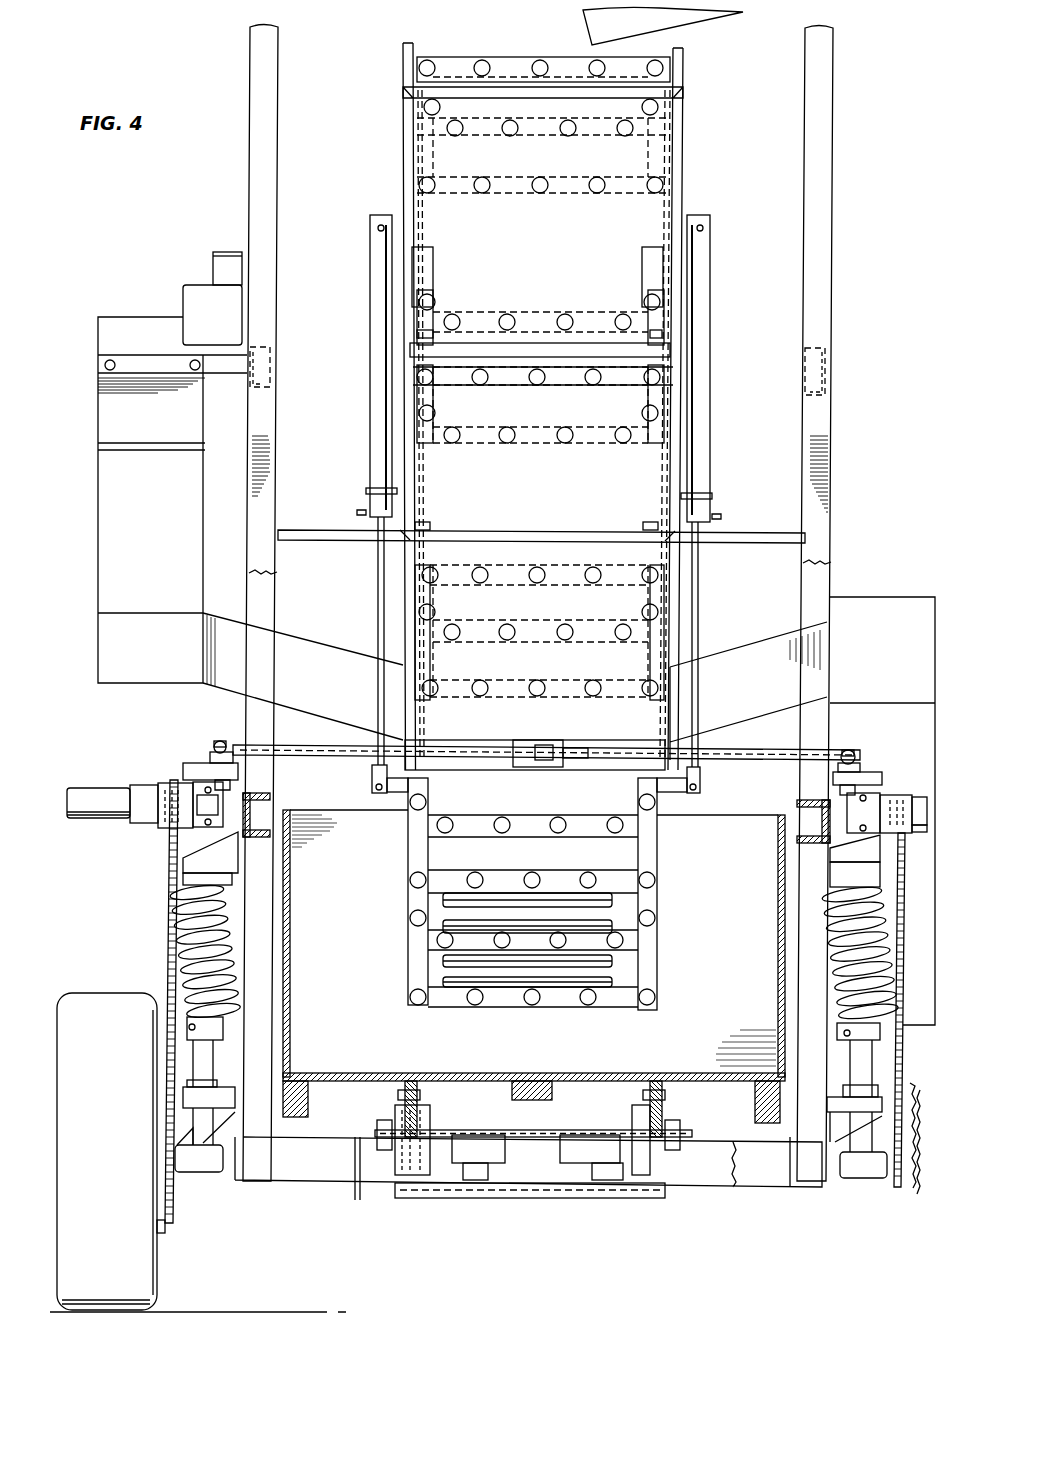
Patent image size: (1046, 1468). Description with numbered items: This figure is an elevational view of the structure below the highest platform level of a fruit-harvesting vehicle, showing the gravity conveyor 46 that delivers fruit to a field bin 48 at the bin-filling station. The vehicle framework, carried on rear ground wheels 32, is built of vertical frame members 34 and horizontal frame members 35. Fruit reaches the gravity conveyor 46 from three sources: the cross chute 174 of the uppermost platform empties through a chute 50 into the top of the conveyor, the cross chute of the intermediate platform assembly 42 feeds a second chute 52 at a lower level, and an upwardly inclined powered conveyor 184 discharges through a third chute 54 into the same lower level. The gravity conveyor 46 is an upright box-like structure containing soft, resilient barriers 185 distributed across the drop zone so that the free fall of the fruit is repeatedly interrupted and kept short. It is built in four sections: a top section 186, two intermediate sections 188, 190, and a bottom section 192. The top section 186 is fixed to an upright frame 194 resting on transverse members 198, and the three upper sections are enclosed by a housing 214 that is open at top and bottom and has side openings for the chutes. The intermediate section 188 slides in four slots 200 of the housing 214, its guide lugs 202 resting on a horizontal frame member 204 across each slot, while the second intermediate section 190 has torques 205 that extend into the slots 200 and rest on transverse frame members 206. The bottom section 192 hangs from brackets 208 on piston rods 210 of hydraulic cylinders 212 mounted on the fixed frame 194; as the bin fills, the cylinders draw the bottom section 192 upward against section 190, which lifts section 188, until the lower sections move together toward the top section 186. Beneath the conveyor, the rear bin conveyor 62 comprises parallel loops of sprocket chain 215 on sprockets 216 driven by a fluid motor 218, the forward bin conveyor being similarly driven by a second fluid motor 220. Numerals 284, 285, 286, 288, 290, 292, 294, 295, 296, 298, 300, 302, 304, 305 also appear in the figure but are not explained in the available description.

The rear ground wheels 32 is at (922, 1063).
The vertical frame members 34 is at (250, 228).
The horizontal frame members 35 is at (265, 383).
The intermediate platform assembly 42 is at (183, 290).
The gravity conveyor 46 is at (400, 200).
The field bin 48 is at (290, 985).
The chute 50 is at (590, 28).
The second chute 52 is at (228, 605).
The third chute 54 is at (747, 648).
The rear bin conveyor 62 is at (427, 1198).
The cross chute 174 is at (98, 395).
The second upwardly inclined powered conveyor 184 is at (882, 603).
The barriers 185 is at (520, 152).
The top section 186 is at (667, 147).
The intermediate section 188 is at (662, 393).
The second intermediate section 190 is at (665, 622).
The bottom section 192 is at (657, 907).
The upright frame 194 is at (683, 185).
The transverse members 198 is at (743, 533).
The slots 200 is at (433, 250).
The guide lugs 202 is at (417, 333).
The horizontal frame member 204 is at (520, 340).
The torques 205 is at (427, 523).
The transverse frame members 206 is at (538, 535).
The brackets 208 is at (397, 790).
The piston rods 210 is at (378, 698).
The hydraulic cylinders 212 is at (378, 446).
The housing 214 is at (535, 495).
The sprocket chain 215 is at (412, 1073).
The sprockets 216 is at (402, 1100).
The fluid motor 218 is at (570, 1140).
The second fluid motor 220 is at (487, 1163).
The foot 284 is at (208, 1172).
The strut rod 285 is at (205, 1060).
The block 286 is at (238, 855).
The spring 288 is at (183, 920).
The pin 290 is at (232, 890).
The rack 292 is at (170, 868).
The pin 294 is at (167, 785).
The plate 295 is at (160, 798).
The bracket 296 is at (223, 790).
The cylinder 298 is at (115, 820).
The bracket 300 is at (200, 763).
The rod 302 is at (447, 746).
The knob 304 is at (220, 740).
The coupler 305 is at (580, 752).